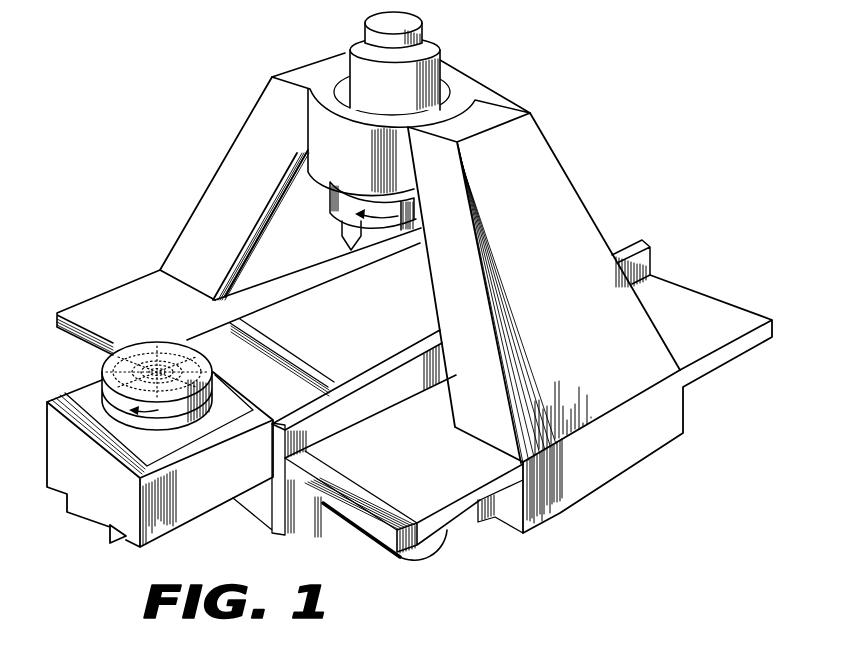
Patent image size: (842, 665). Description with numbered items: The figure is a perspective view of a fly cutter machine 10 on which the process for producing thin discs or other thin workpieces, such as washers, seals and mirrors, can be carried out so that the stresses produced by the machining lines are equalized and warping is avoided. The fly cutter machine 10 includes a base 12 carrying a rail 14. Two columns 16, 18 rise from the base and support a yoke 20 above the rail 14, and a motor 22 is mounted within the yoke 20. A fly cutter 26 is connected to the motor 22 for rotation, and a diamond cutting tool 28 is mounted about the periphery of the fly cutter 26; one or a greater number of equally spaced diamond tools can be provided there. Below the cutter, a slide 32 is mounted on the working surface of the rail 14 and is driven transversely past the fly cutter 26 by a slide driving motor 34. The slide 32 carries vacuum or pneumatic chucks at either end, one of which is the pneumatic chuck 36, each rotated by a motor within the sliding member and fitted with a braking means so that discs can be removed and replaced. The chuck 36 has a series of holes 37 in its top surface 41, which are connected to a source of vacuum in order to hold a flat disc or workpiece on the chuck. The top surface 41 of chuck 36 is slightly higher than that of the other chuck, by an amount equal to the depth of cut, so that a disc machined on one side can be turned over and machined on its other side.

The fly cutter machine 10 is at (606, 145).
The base 12 is at (645, 448).
The rail 14 is at (687, 292).
The column 16 is at (580, 205).
The column 18 is at (230, 153).
The yoke 20 is at (480, 97).
The motor 22 is at (432, 50).
The fly cutter 26 is at (332, 207).
The diamond cutting tool 28 is at (357, 243).
The slide 32 is at (90, 520).
The slide driving motor 34 is at (420, 578).
The pneumatic chuck 36 is at (133, 354).
The holes 37 is at (158, 364).
The top surface 41 is at (203, 372).